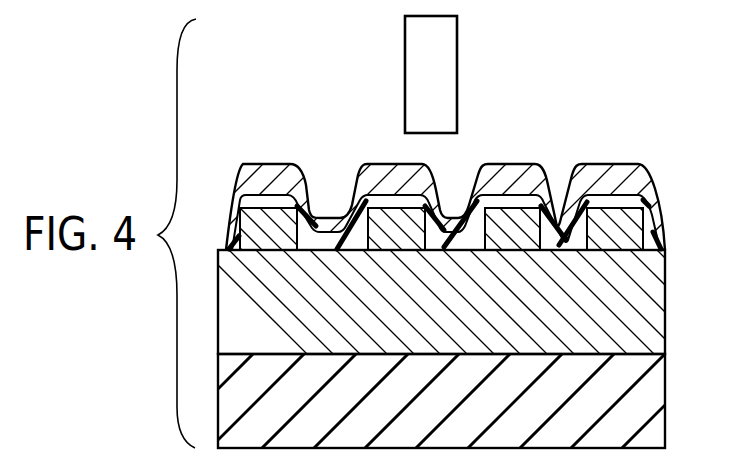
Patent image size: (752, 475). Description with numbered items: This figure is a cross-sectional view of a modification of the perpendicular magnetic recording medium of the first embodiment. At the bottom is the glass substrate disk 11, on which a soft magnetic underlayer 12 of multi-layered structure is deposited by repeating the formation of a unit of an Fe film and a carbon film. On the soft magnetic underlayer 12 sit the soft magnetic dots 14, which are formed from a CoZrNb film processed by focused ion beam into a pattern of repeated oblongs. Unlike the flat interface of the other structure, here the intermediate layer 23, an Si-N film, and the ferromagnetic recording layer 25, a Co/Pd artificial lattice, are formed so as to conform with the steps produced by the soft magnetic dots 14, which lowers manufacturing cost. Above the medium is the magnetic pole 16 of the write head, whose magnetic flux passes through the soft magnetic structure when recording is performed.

The glass substrate disk 11 is at (665, 397).
The soft magnetic underlayer 12 is at (665, 315).
The soft magnetic dots 14 is at (270, 212).
The magnetic pole 16 is at (458, 67).
The intermediate layer 23 is at (648, 221).
The ferromagnetic recording layer 25 is at (640, 177).